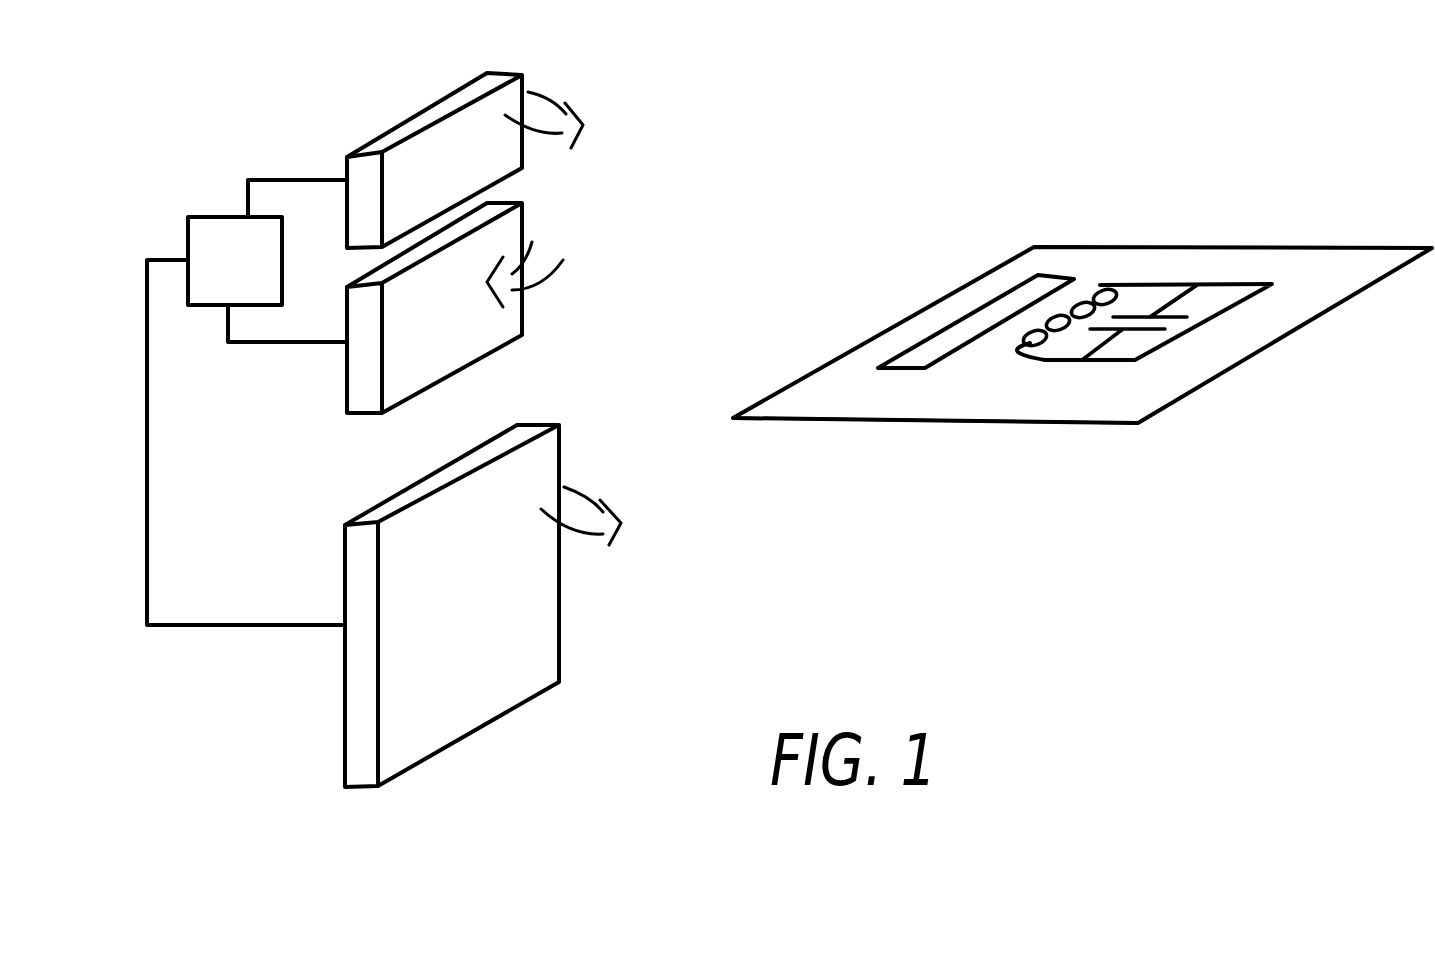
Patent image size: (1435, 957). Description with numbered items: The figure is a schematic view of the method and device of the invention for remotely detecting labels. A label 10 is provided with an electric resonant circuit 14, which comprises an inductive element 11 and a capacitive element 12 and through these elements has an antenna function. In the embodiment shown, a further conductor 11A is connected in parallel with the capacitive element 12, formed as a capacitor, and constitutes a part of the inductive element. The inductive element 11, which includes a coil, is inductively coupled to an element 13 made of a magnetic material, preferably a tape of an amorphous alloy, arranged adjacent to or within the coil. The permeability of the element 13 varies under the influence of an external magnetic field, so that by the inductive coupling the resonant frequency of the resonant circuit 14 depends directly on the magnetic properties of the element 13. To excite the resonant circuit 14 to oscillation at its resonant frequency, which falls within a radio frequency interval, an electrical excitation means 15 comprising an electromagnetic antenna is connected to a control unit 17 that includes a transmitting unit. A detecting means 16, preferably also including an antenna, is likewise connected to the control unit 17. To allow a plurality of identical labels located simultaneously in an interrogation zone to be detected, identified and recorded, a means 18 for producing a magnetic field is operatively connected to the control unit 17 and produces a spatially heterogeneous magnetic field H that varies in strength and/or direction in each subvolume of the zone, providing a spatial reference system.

The label 10 is at (1360, 262).
The inductive element 11 is at (1093, 293).
The further conductor 11A is at (1226, 300).
The capacitive element 12 is at (1136, 319).
The element of magnetic material 13 is at (950, 336).
The electric resonant circuit 14 is at (940, 430).
The electrical excitation means 15 is at (412, 125).
The detecting means 16 is at (357, 377).
The control unit 17 is at (214, 229).
The means for producing a magnetic field 18 is at (460, 709).
The magnetic field direction H is at (601, 506).